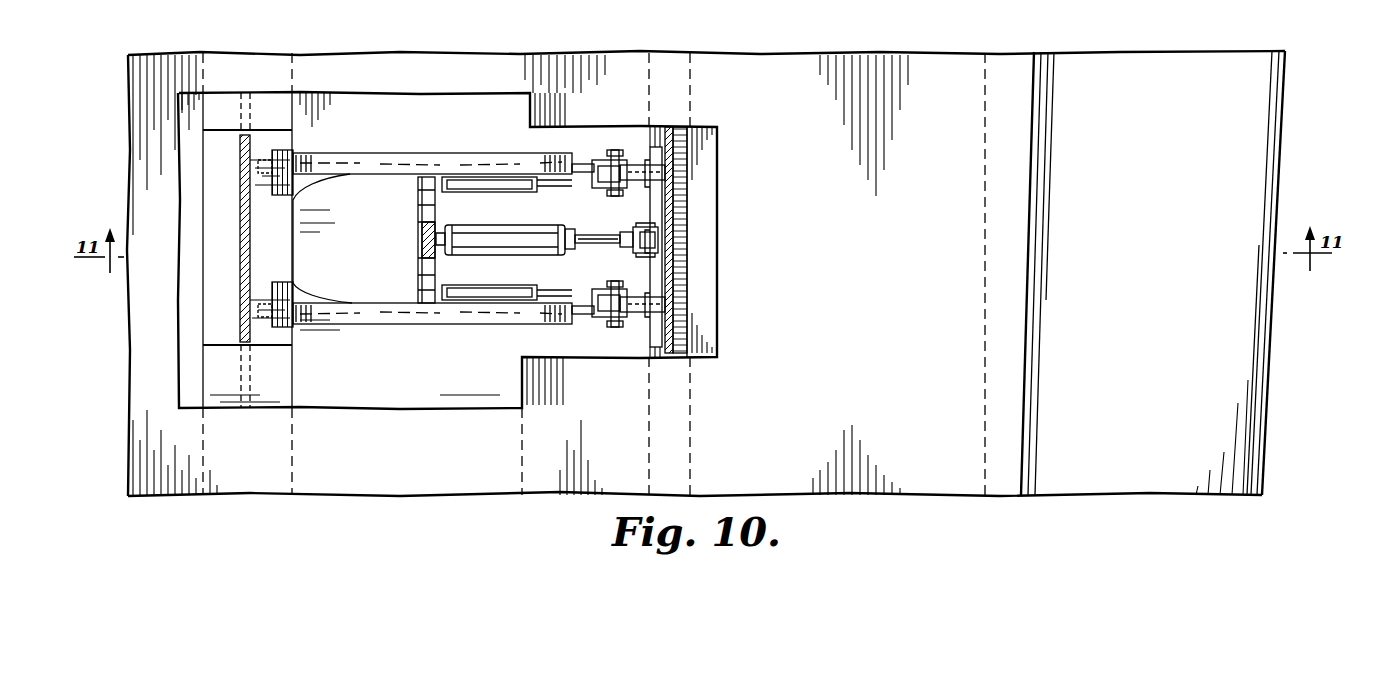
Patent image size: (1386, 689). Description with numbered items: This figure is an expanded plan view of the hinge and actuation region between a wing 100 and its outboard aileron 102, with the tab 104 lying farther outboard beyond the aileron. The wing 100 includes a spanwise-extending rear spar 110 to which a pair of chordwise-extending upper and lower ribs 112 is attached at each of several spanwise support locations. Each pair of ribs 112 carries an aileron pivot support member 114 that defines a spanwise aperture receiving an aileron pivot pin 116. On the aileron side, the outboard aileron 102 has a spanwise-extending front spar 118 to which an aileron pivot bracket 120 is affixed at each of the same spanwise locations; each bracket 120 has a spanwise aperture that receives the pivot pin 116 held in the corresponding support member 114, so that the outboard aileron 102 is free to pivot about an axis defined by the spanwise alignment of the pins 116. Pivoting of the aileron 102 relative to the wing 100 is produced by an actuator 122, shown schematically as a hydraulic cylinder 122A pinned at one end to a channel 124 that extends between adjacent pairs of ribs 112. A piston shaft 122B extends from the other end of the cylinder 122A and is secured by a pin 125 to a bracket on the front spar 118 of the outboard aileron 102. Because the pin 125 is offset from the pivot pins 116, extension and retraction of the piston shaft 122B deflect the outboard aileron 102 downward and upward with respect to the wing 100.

The wing 100 is at (425, 274).
The outboard aileron 102 is at (899, 274).
The tab 104 is at (1153, 273).
The rear spar 110 is at (243, 282).
The upper and lower ribs 112 is at (380, 164).
The aileron pivot support member 114 is at (580, 164).
The aileron pivot pin 116 is at (618, 159).
The front spar 118 is at (672, 220).
The aileron pivot bracket 120 is at (700, 172).
The actuator 122 is at (534, 239).
The hydraulic cylinder 122A is at (477, 234).
The piston shaft 122B is at (605, 221).
The channel 124 is at (418, 216).
The pin 125 is at (640, 255).